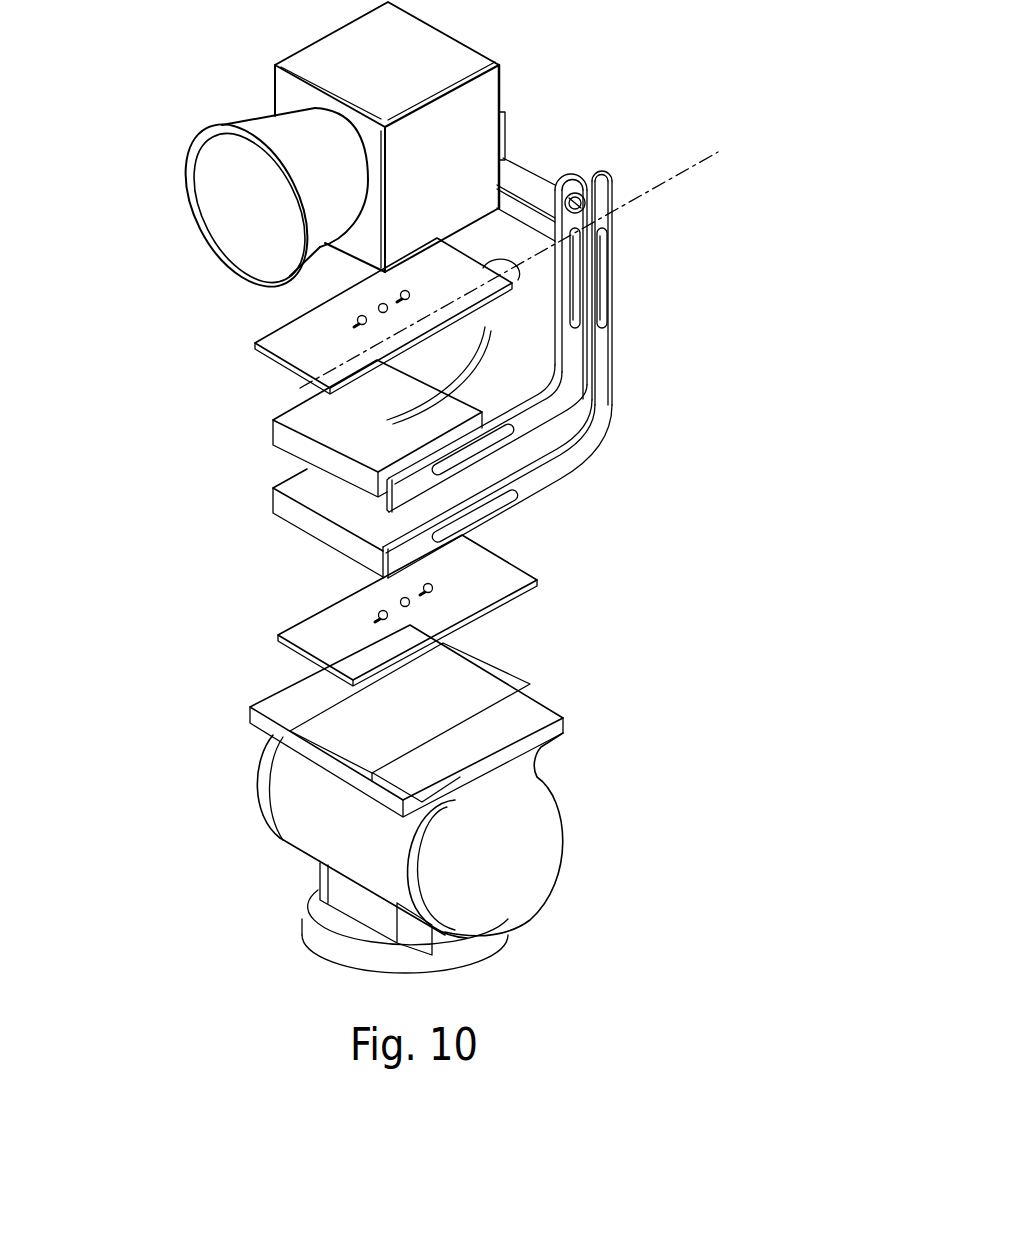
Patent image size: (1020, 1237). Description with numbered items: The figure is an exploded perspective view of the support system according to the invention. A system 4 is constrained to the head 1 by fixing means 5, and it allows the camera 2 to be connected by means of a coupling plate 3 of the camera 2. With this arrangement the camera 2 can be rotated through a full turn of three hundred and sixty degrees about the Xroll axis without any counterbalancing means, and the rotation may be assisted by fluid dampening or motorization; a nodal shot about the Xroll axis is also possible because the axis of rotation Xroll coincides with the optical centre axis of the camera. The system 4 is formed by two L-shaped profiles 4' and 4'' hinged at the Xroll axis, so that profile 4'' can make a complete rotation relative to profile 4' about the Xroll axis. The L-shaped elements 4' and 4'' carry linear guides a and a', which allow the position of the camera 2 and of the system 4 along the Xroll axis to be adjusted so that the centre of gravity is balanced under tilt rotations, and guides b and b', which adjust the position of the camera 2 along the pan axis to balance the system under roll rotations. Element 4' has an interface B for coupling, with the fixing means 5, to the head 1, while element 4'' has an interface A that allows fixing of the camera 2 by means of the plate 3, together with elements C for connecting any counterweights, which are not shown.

The head 1 is at (258, 795).
The camera 2 is at (190, 153).
The coupling plate 3 is at (253, 338).
The system 4 is at (344, 304).
The L shaped profile 4' is at (548, 374).
The L shaped profile 4'' is at (547, 343).
The fixing means 5 is at (278, 634).
The interface A is at (330, 418).
The interface B is at (350, 516).
The elements for the connection of counterweights C is at (605, 176).
The linear guide a is at (523, 540).
The linear guide a' is at (527, 475).
The guide b is at (665, 307).
The guide b' is at (640, 280).
The Xroll axis Xroll is at (531, 270).